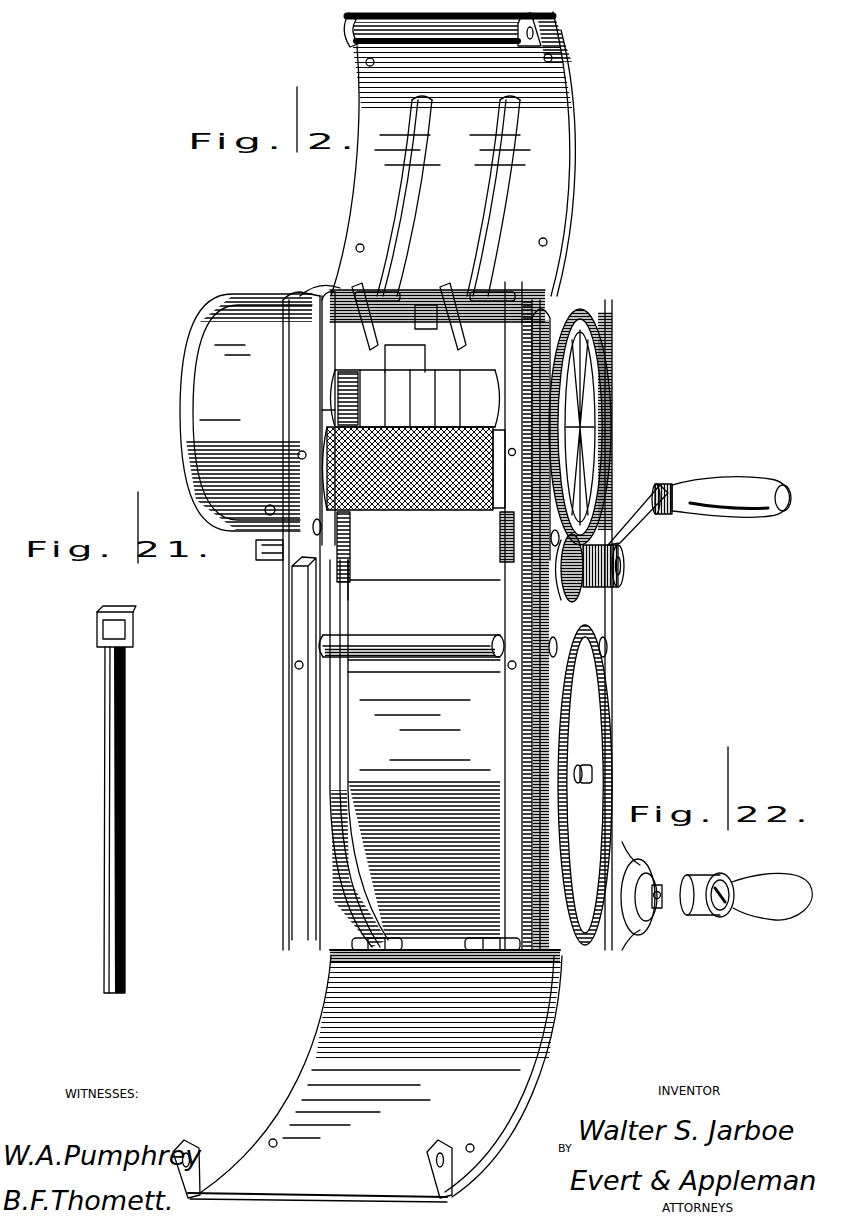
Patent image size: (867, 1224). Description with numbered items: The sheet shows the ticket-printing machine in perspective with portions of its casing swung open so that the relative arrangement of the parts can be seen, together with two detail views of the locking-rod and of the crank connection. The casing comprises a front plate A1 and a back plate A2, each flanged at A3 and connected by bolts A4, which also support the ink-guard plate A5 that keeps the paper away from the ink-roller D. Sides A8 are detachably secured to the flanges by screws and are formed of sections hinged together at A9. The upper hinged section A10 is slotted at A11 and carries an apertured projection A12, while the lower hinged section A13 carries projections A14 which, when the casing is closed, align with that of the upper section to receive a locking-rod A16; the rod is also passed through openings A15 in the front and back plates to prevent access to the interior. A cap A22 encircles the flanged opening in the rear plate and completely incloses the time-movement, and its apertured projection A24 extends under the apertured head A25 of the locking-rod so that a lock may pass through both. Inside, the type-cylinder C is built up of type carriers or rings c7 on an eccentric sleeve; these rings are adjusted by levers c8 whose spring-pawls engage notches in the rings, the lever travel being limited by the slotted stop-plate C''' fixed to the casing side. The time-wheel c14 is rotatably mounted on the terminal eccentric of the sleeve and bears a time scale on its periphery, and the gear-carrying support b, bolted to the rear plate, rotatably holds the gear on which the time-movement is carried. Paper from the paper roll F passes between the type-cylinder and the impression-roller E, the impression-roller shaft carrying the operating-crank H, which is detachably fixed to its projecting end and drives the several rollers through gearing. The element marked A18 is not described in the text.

In FIG. 2, the upper hinged section A10 is at (560, 178).
In FIG. 2, the slots A11 is at (500, 192).
In FIG. 2, the apertured projection A12 is at (345, 38).
In FIG. 2, the cap A22 is at (196, 350).
In FIG. 2, the flanges A3 is at (303, 402).
In FIG. 2, the back plate A2 is at (285, 603).
In FIG. 2, the sides A8 is at (548, 292).
In FIG. 2, the hinges A9 is at (413, 300).
In FIG. 2, the housing corner lug A18 is at (350, 295).
In FIG. 2, the levers c8 is at (356, 296).
In FIG. 2, the slotted plate C''' is at (444, 299).
In FIG. 2, the type-cylinder C is at (449, 386).
In FIG. 2, the time-wheel c14 is at (343, 408).
In FIG. 2, the gear-carrying support b is at (323, 410).
In FIG. 2, the type carriers or rings c7 is at (551, 360).
In FIG. 2, the ink-roller D is at (432, 513).
In FIG. 2, the openings A15 is at (323, 533).
In FIG. 2, the apertured projection A24 is at (253, 550).
In FIG. 2, the ink-guard plate A5 is at (363, 613).
In FIG. 2, the paper roll F is at (415, 753).
In FIG. 2, the bolts A4 is at (612, 647).
In FIG. 2, the front plate A1 is at (600, 593).
In FIG. 2, the operating-crank H is at (663, 486).
In FIG. 22, the operating-crank H is at (748, 908).
In FIG. 2, the lower hinged section A13 is at (332, 1047).
In FIG. 2, the projections A14 is at (182, 1142).
In FIG. 21, the locking-rod A16 is at (121, 805).
In FIG. 21, the apertured head A25 is at (100, 625).
In FIG. 22, the impression-roller E is at (660, 890).